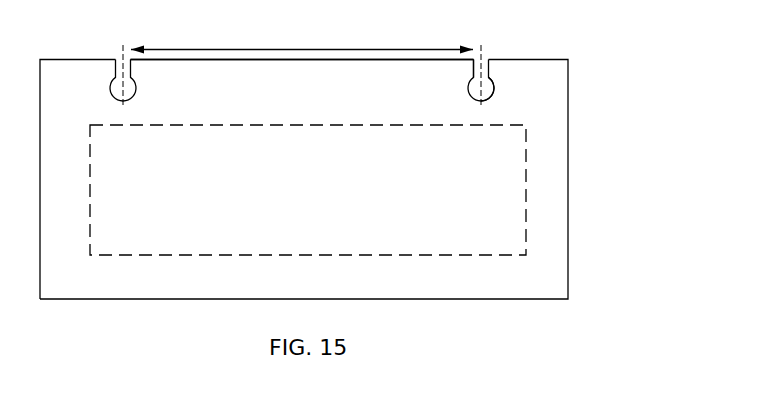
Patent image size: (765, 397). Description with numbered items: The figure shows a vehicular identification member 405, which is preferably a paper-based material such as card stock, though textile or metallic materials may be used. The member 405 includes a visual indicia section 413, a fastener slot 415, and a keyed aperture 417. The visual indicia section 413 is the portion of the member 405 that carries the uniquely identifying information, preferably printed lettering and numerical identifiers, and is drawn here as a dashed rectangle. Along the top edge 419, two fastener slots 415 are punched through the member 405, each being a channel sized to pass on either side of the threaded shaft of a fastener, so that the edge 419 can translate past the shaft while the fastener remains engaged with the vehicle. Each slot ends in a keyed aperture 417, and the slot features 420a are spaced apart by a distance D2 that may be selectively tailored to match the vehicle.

The vehicular identification member 405 is at (634, 97).
The keyhole slot 420a is at (122, 51).
The distance between slots D2 is at (288, 49).
The edge 419 is at (258, 60).
The fastener slot 415 is at (474, 71).
The keyed aperture 417 is at (492, 86).
The visual indicia section 413 is at (437, 256).